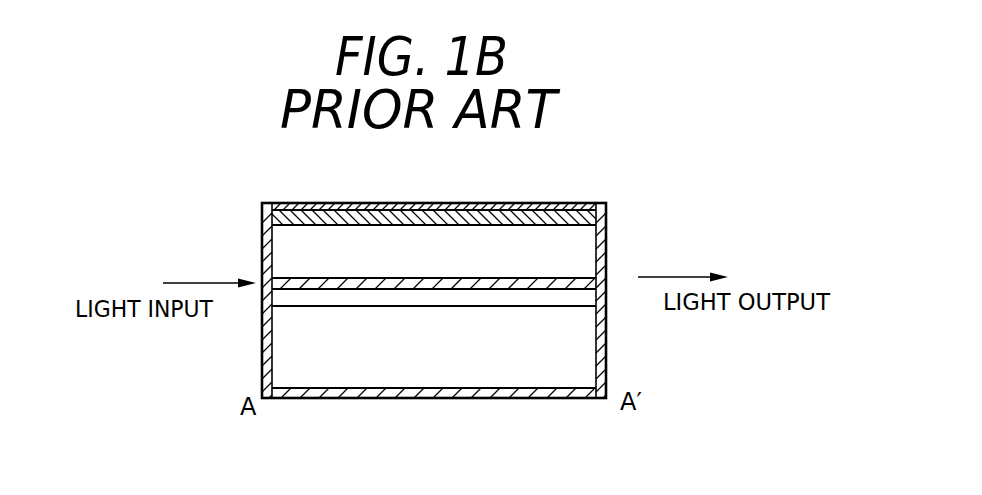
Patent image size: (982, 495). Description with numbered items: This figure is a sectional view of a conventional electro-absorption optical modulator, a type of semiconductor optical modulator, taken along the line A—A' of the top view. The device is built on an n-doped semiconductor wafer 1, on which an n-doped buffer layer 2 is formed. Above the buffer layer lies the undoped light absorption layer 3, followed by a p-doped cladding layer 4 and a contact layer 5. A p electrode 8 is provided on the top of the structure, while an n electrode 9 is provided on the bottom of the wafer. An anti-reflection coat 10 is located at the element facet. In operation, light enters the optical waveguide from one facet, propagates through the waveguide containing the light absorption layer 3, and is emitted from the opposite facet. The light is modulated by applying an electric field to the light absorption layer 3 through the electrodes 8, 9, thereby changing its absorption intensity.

The n-doped semiconductor wafer 1 is at (583, 355).
The n-doped buffer layer 2 is at (367, 296).
The undoped light absorption layer 3 is at (463, 283).
The p-doped cladding layer 4 is at (578, 237).
The contact layer 5 is at (559, 212).
The p electrode 8 is at (411, 203).
The n electrode 9 is at (445, 394).
The anti-reflection coat 10 is at (607, 205).